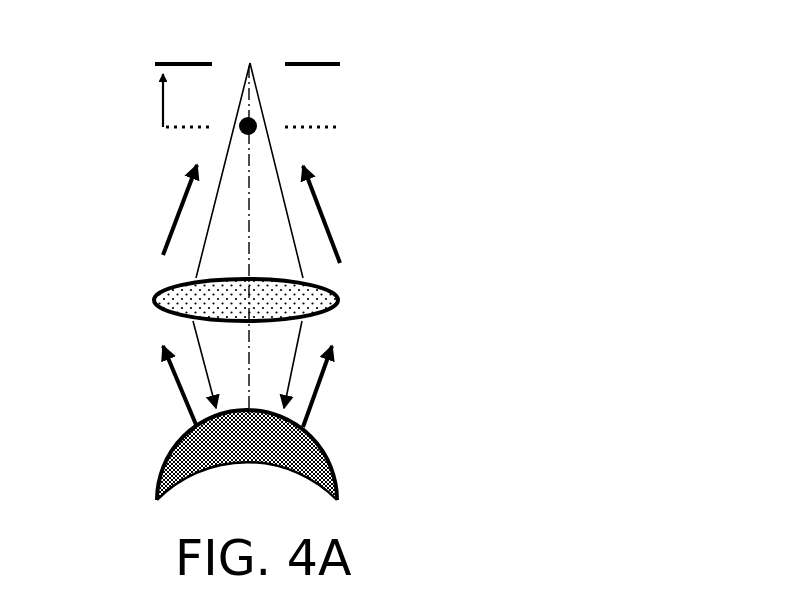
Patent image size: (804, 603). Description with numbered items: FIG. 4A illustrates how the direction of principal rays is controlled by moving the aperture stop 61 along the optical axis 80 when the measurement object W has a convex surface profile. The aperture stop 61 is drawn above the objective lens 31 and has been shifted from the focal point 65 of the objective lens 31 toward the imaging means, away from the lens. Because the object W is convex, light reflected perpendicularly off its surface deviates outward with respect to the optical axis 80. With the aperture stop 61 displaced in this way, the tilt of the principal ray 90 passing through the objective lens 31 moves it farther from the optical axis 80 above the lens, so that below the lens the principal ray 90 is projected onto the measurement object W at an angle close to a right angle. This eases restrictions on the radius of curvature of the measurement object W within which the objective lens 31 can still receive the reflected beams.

The aperture stop 61 is at (322, 63).
The focal point 65 is at (255, 118).
The objective lens 31 is at (337, 298).
The optical axis 80 is at (250, 342).
The principal ray 90 is at (302, 337).
The measurement object W is at (328, 458).